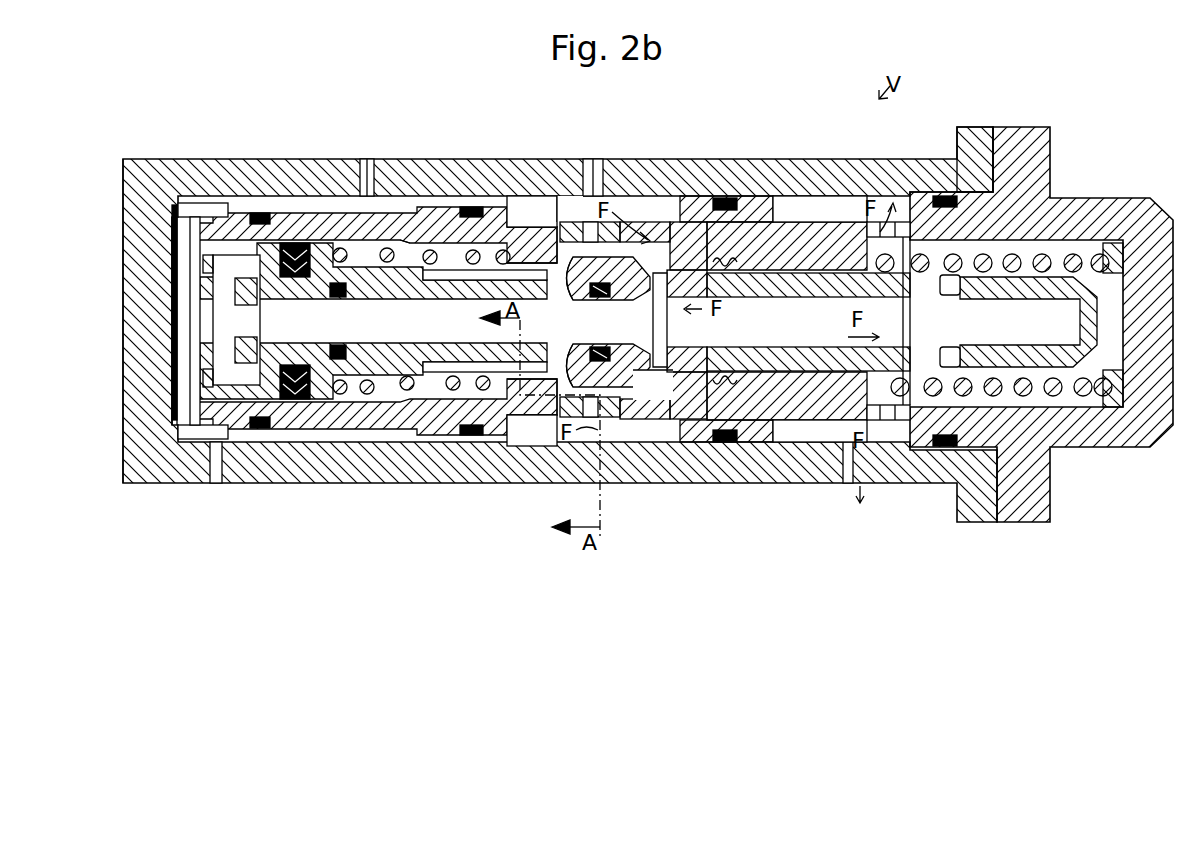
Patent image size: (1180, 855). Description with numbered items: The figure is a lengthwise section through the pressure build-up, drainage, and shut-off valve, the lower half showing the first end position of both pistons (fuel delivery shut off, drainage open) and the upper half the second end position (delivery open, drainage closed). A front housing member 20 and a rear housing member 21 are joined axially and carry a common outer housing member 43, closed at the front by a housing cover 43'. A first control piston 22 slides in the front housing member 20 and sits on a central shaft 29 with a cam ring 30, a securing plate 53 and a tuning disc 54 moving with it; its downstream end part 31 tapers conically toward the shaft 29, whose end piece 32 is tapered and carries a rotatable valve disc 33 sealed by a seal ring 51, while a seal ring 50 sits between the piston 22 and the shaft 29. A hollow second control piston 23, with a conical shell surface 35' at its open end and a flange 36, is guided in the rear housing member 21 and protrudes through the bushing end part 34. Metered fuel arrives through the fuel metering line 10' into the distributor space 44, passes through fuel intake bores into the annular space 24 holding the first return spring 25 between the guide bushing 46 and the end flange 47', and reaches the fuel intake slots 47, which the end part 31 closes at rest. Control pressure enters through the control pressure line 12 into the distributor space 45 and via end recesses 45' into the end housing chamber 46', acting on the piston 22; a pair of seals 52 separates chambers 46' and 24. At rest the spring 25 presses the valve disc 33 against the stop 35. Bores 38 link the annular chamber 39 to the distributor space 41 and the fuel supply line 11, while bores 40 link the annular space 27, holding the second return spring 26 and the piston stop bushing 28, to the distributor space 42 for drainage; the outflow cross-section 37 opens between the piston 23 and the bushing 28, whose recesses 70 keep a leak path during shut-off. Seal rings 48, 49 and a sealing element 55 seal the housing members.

The fuel metering line 10' is at (384, 159).
The fuel supply line 11 is at (597, 158).
The control pressure line 12 is at (220, 496).
The front housing member 20 is at (362, 432).
The rear housing member 21 is at (840, 462).
The first control piston 22 is at (380, 296).
The second control piston 23 is at (749, 356).
The annular space 24 is at (430, 266).
The first return spring 25 is at (410, 392).
The second return spring 26 is at (1000, 378).
The annular space 27 is at (1077, 240).
The piston stop bushing 28 is at (1055, 280).
The central shaft 29 is at (292, 333).
The cam ring 30 is at (240, 300).
The end part 31 is at (568, 310).
The end piece 32 is at (707, 348).
The valve disc 33 is at (625, 297).
The bushing end part 34 is at (686, 462).
The stop 35 is at (595, 430).
The conical shell surface 35' is at (657, 385).
The radially projecting flange 36 is at (853, 262).
The outflow cross-section 37 is at (905, 290).
The bores 38 is at (605, 416).
The annular chamber 39 is at (668, 240).
The bores 40 is at (897, 212).
The distributor space 41 is at (567, 205).
The distributor space 42 is at (820, 203).
The outer housing member 43 is at (560, 322).
The housing cover 43' is at (124, 321).
The distributor space 44 is at (423, 202).
The distributor space 45 is at (203, 170).
The end recesses 45' is at (154, 281).
The guide bushing 46 is at (532, 286).
The end housing chamber 46' is at (144, 265).
The fuel intake slots 47 is at (535, 321).
The end flange 47' is at (308, 200).
The seal rings 48 is at (262, 428).
The seal rings 49 is at (725, 198).
The seal ring 50 is at (338, 298).
The seal ring 51 is at (600, 297).
The pair of seals 52 is at (295, 400).
The securing plate 53 is at (180, 272).
The tuning disc 54 is at (218, 287).
The sealing element 55 is at (735, 265).
The recesses 70 is at (952, 348).